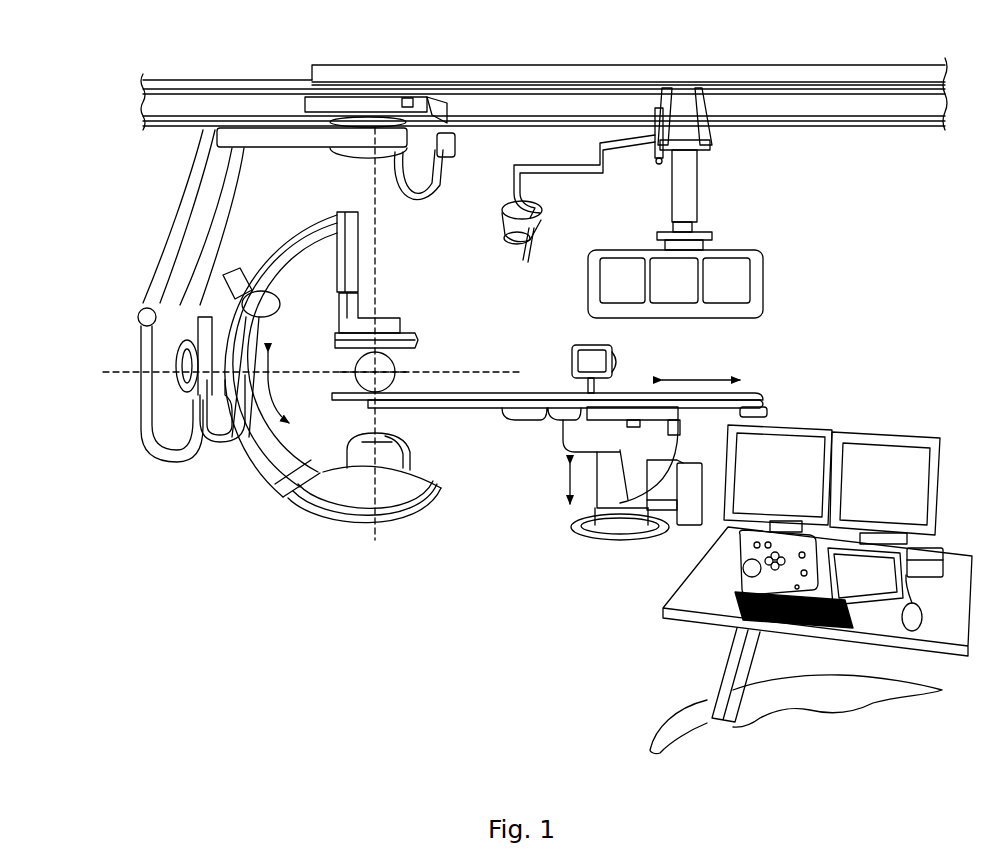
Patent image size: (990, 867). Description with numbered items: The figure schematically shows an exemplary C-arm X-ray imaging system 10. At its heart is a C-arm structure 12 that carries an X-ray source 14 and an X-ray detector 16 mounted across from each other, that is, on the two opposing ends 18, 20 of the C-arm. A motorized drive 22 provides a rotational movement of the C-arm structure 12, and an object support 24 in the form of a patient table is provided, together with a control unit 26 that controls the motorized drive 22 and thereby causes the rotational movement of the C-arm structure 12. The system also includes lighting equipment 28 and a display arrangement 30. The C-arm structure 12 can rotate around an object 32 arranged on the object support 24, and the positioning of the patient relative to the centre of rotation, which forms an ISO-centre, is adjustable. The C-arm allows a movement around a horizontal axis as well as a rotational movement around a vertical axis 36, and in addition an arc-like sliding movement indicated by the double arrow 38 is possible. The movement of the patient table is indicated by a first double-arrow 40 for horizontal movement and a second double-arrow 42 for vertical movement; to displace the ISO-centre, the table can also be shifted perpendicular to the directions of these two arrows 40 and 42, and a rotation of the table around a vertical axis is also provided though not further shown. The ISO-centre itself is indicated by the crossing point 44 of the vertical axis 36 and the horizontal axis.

The C-arm X-ray imaging system 10 is at (514, 46).
The C-arm structure 12 is at (198, 484).
The X-ray source 14 is at (413, 455).
The X-ray detector 16 is at (415, 338).
The end of the C-arm 18 is at (337, 513).
The end of the C-arm 20 is at (343, 213).
The motorized drive 22 is at (108, 400).
The object support 24 is at (112, 370).
The control unit 26 is at (658, 562).
The lighting equipment 28 is at (540, 248).
The display arrangement 30 is at (731, 252).
The object 32 is at (395, 362).
The vertical axis 36 is at (378, 532).
The double arrow 38 is at (272, 395).
The first double-arrow 40 is at (705, 378).
The second double-arrow 42 is at (553, 480).
The crossing point 44 is at (362, 376).